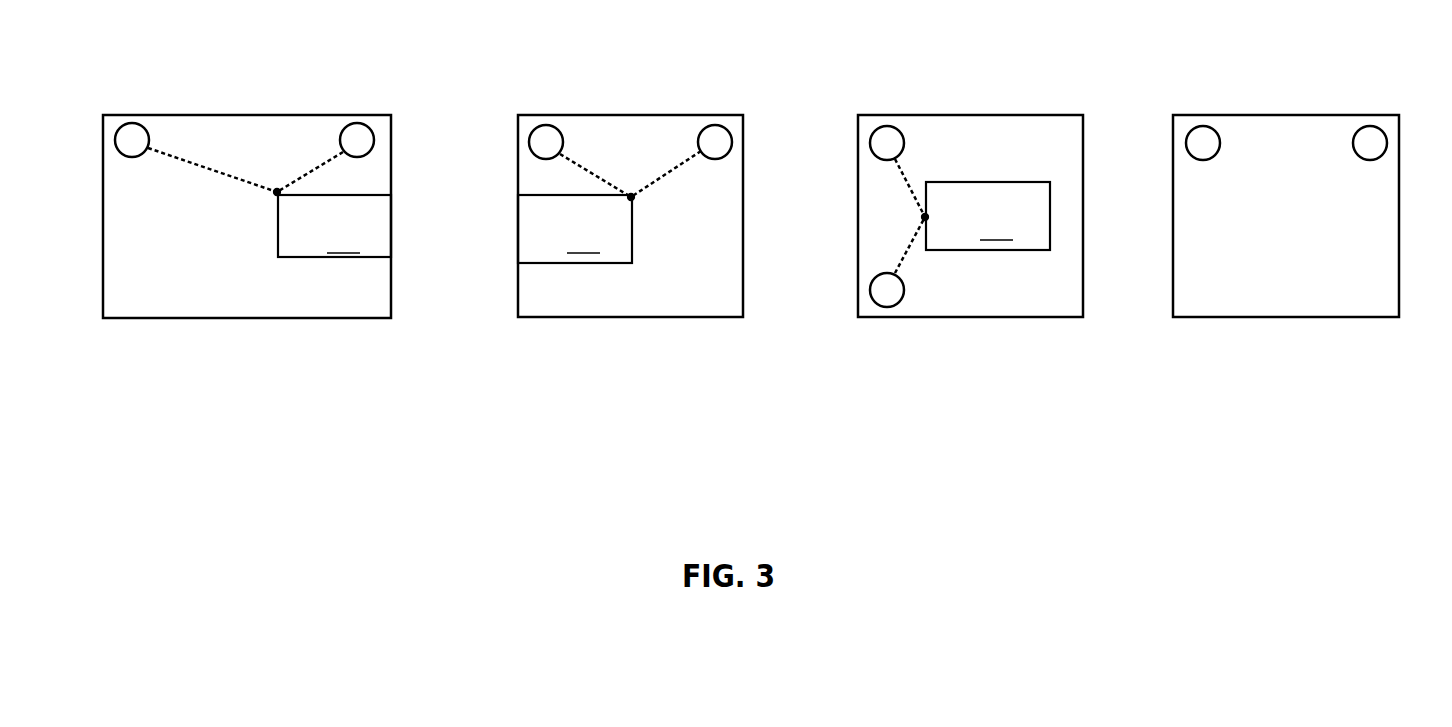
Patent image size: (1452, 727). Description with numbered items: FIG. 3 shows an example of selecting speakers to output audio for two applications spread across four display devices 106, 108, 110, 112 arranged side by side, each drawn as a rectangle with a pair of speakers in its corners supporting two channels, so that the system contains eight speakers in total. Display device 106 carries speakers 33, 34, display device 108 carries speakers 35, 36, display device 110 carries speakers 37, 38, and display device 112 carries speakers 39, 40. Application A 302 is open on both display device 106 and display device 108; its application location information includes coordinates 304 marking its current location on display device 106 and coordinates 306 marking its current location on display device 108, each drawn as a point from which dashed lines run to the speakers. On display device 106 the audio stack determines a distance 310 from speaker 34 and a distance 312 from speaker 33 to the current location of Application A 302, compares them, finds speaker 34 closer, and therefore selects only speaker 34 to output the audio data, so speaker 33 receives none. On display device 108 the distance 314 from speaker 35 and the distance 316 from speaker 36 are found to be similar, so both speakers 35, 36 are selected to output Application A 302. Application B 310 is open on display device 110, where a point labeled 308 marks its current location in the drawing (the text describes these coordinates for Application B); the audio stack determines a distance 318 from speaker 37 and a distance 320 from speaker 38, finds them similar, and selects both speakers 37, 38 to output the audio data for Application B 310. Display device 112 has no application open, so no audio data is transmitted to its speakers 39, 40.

The display device 106 is at (313, 58).
The display device 108 is at (715, 58).
The display device 110 is at (1053, 58).
The display device 112 is at (1370, 58).
The speaker 33 is at (118, 130).
The speaker 34 is at (371, 130).
The speaker 35 is at (534, 130).
The speaker 36 is at (732, 142).
The speaker 37 is at (870, 141).
The speaker 38 is at (872, 295).
The speaker 39 is at (1186, 143).
The speaker 40 is at (1387, 143).
The Application A 302 is at (455, 229).
The Application B 310 is at (317, 168).
The coordinates 304 is at (277, 192).
The coordinates 306 is at (631, 197).
The pointer position 308 is at (925, 217).
The distance 312 is at (197, 165).
The distance 314 is at (570, 163).
The distance 316 is at (680, 167).
The distance 318 is at (907, 183).
The distance 320 is at (906, 252).